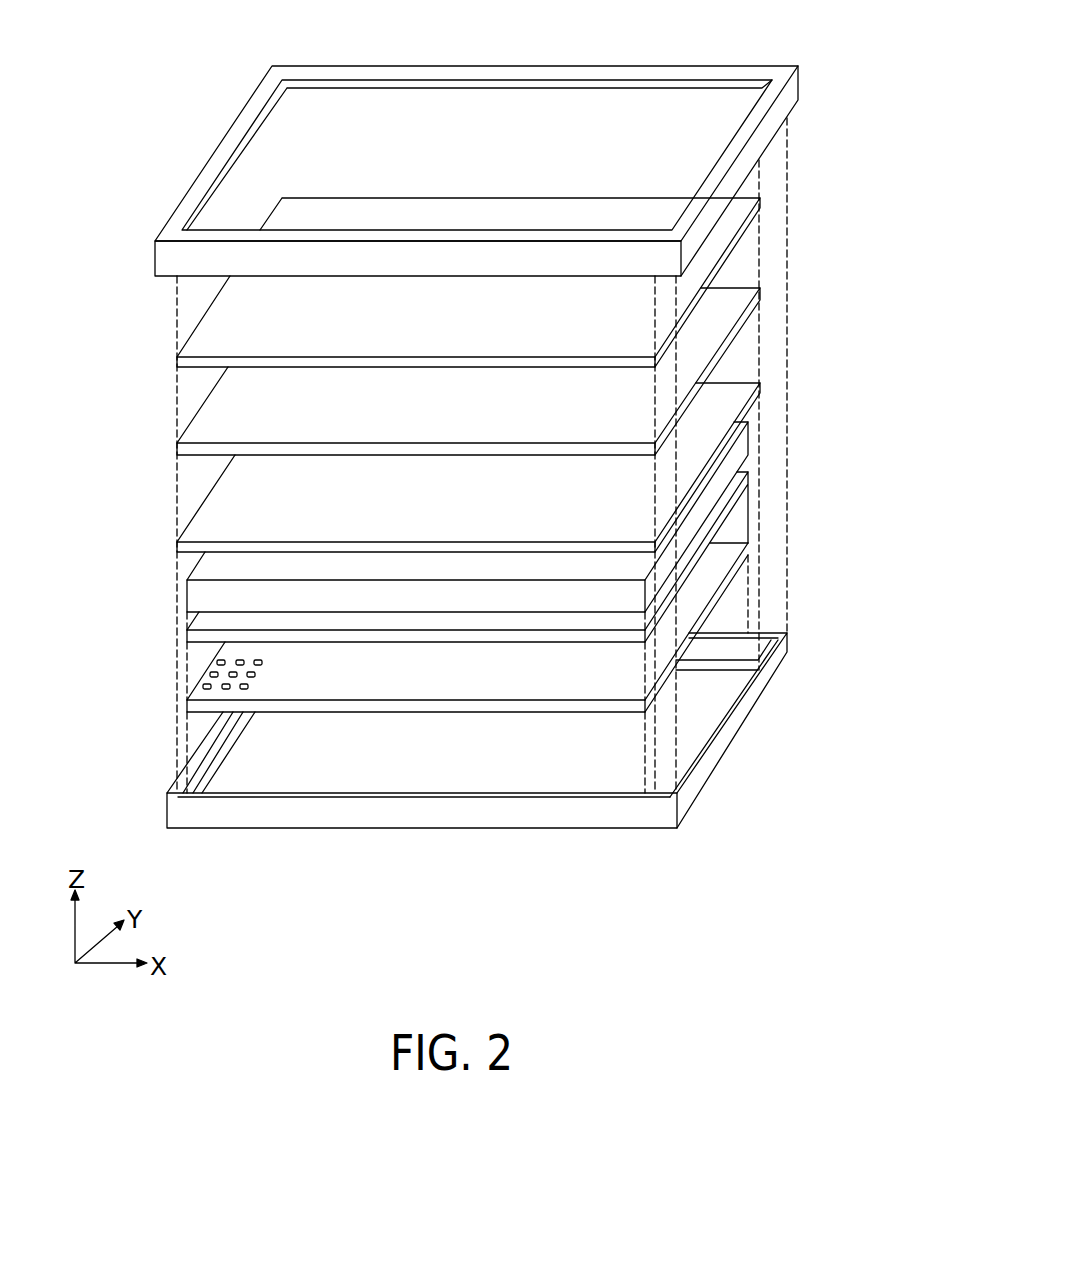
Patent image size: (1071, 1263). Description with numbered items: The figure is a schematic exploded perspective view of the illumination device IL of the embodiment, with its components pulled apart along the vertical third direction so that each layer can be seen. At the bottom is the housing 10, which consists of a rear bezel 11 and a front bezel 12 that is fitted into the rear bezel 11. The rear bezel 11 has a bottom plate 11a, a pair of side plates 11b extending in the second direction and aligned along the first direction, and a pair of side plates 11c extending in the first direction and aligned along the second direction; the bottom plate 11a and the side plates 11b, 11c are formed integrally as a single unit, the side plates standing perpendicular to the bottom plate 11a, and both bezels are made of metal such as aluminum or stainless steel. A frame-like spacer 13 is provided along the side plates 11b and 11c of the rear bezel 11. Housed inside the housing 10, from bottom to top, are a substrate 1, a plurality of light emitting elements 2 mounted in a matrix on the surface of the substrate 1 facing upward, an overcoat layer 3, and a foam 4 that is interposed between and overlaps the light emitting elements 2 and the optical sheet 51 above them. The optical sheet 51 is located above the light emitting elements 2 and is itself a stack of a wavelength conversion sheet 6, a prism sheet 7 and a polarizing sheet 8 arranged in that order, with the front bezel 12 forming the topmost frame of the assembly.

The illumination device IL is at (825, 52).
The housing 10 is at (471, 472).
The front bezel 12 is at (172, 258).
The polarizing sheet 8 is at (745, 228).
The prism sheet 7 is at (745, 320).
The wavelength conversion sheet 6 is at (508, 467).
The optical sheet 51 is at (533, 375).
The foam 4 is at (745, 443).
The overcoat layer 3 is at (730, 510).
The substrate 1 is at (720, 597).
The light emitting elements 2 is at (264, 662).
The rear bezel 11 is at (475, 756).
The bottom plate 11a is at (370, 782).
The side plates 11b is at (197, 768).
The side plates 11c is at (577, 817).
The frame-like spacer 13 is at (233, 730).